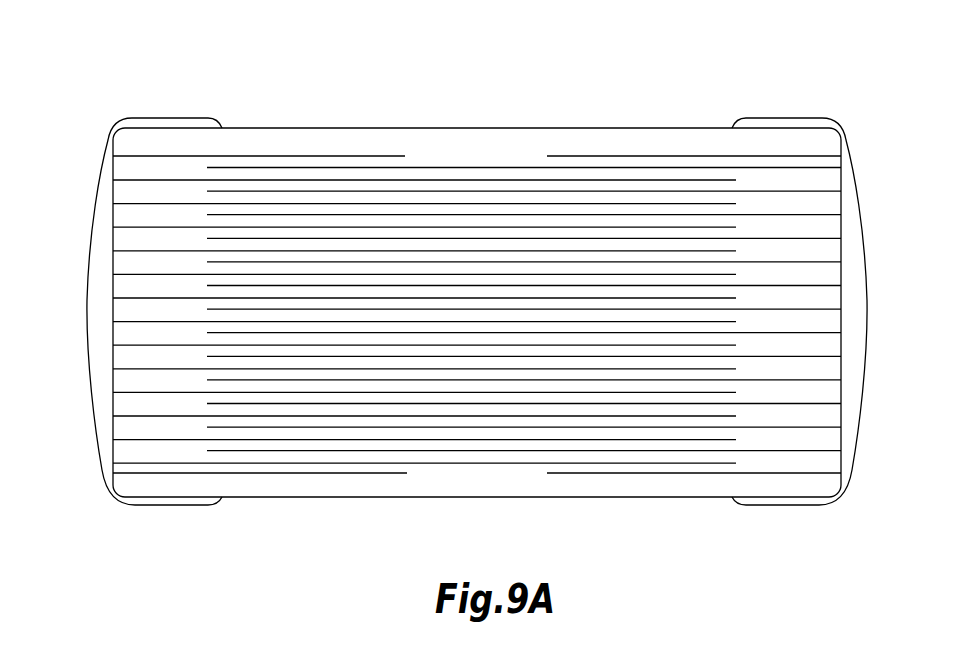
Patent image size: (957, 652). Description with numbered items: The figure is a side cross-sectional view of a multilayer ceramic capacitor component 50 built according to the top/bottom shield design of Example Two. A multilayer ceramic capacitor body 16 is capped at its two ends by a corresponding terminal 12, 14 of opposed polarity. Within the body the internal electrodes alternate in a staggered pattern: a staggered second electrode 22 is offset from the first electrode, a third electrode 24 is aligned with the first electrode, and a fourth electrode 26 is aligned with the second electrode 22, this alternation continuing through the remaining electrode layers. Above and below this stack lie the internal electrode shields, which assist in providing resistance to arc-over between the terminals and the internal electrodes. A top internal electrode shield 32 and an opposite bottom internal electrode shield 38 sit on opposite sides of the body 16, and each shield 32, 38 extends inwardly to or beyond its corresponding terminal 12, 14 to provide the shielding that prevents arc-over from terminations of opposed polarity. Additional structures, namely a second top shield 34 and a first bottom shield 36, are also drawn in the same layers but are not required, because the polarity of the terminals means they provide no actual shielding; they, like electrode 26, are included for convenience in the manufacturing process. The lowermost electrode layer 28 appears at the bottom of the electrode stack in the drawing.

The multilayer ceramic capacitor component 50 is at (695, 67).
The terminal 12 is at (148, 118).
The terminal 14 is at (815, 120).
The multilayer ceramic capacitor body 16 is at (320, 128).
The second electrode 22 is at (445, 167).
The third electrode 24 is at (135, 181).
The fourth electrode 26 is at (810, 193).
The bottom internal electrode 28 is at (135, 463).
The top internal electrode shield 32 is at (143, 155).
The second top shield 34 is at (695, 156).
The first bottom shield 36 is at (279, 473).
The bottom internal electrode shield 38 is at (667, 473).